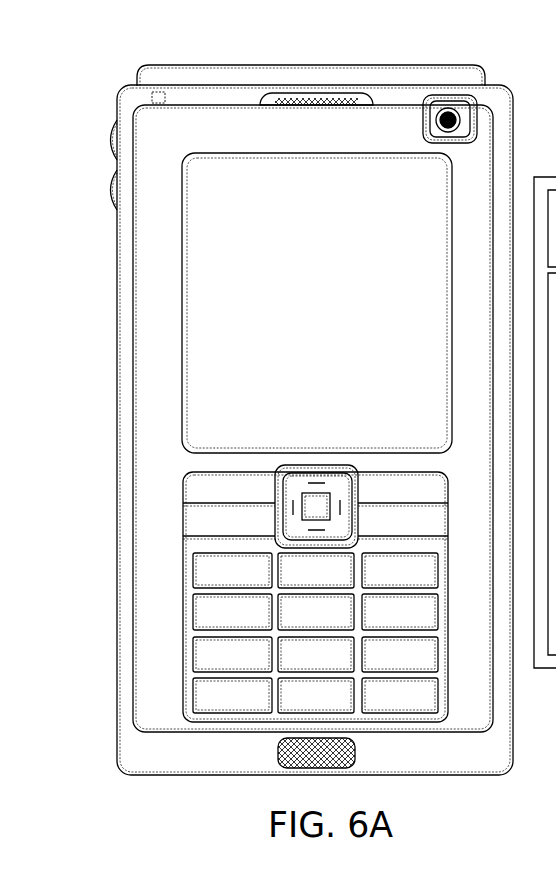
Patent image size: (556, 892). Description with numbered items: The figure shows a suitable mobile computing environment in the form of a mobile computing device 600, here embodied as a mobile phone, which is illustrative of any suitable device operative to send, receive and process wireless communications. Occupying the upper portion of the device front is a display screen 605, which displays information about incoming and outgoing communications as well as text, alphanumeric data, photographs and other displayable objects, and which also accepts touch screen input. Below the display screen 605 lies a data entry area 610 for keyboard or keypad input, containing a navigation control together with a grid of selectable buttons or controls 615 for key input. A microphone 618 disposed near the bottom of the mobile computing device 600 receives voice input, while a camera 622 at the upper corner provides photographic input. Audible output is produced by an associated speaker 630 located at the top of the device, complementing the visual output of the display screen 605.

The mobile computing device 600 is at (117, 88).
The display screen 605 is at (218, 288).
The data entry area 610 is at (183, 516).
The selectable buttons or controls 615 is at (207, 612).
The microphone 618 is at (275, 757).
The camera 622 is at (452, 116).
The speaker 630 is at (330, 97).